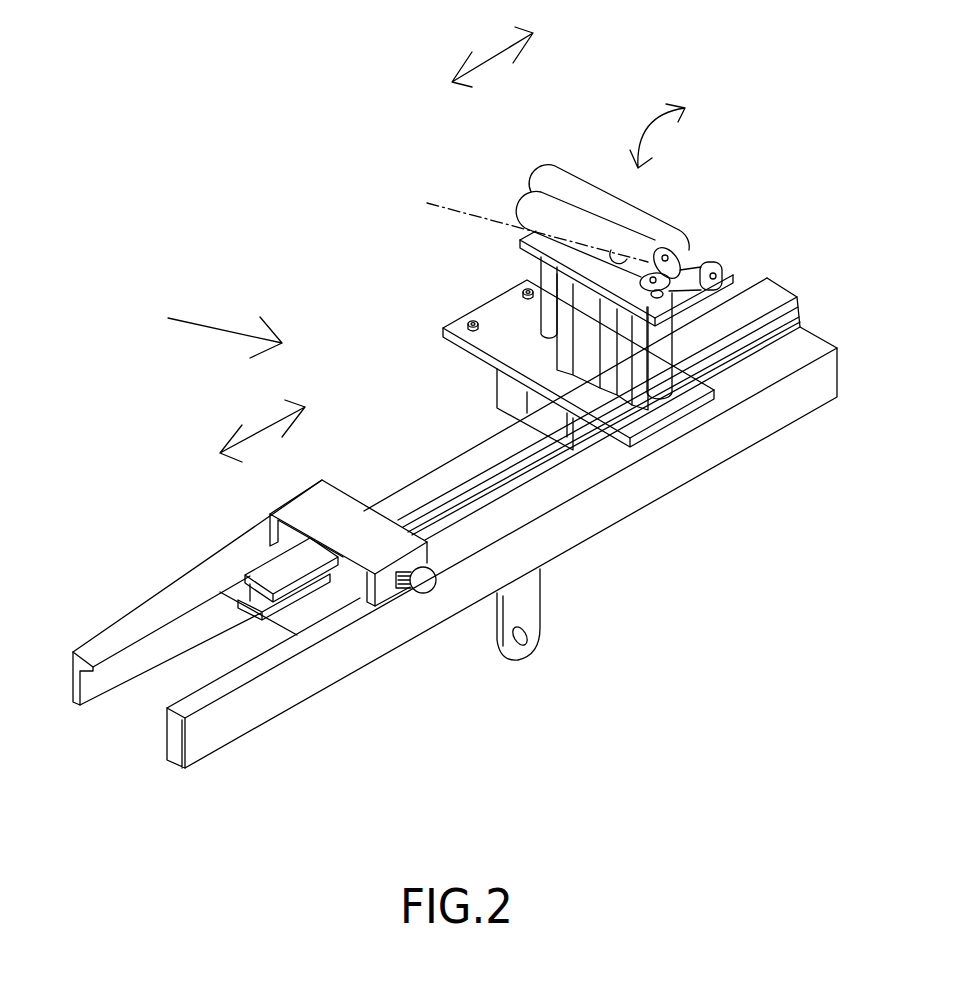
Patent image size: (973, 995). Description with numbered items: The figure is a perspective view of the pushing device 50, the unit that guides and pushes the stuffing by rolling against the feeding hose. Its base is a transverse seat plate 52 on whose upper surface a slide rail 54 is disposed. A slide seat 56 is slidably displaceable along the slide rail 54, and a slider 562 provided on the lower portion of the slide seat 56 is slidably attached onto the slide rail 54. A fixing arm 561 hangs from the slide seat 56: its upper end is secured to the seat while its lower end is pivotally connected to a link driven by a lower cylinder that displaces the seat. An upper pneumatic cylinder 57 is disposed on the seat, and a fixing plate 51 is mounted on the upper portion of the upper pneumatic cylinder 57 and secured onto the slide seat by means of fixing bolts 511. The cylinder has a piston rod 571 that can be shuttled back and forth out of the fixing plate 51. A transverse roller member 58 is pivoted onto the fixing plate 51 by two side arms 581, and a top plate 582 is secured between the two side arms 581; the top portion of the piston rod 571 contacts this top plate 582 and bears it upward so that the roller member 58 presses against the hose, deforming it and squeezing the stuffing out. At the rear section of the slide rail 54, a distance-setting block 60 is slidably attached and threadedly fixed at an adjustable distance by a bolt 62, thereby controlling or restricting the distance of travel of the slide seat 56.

The pushing device 50 is at (163, 346).
The fixing plate 51 is at (565, 260).
The fixing bolts 511 is at (548, 285).
The transverse seat plate 52 is at (567, 527).
The slide rail 54 is at (405, 502).
The slide seat 56 is at (637, 410).
The fixing arm 561 is at (527, 607).
The slider 562 is at (587, 430).
The upper pneumatic cylinder 57 is at (588, 352).
The piston rod 571 is at (500, 223).
The roller member 58 is at (530, 215).
The side arms 581 is at (675, 258).
The top plate 582 is at (680, 252).
The distance-setting block 60 is at (367, 542).
The bolt 62 is at (425, 583).